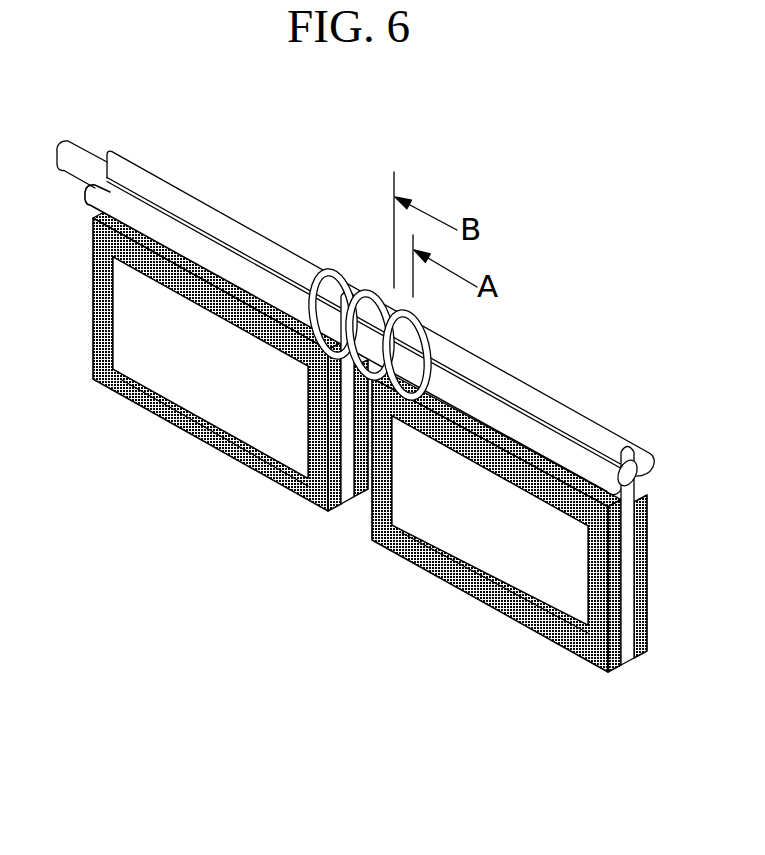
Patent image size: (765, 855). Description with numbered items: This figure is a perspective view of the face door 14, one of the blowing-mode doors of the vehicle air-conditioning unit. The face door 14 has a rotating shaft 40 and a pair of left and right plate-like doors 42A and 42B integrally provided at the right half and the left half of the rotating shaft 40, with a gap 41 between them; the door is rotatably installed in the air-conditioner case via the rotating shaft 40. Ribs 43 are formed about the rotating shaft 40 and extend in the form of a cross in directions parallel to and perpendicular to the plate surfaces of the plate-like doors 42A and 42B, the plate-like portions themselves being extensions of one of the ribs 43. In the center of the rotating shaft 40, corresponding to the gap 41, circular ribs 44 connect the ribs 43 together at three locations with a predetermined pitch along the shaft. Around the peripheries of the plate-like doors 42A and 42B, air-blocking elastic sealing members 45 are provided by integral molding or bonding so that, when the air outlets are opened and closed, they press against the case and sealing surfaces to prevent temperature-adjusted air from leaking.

The face door 14 is at (527, 327).
The rotating shaft 40 is at (210, 236).
The gap 41 is at (357, 515).
The plate-like door 42A is at (187, 372).
The plate-like door 42B is at (557, 570).
The ribs 43 is at (590, 430).
The circular ribs 44 is at (345, 283).
The elastic sealing members 45 is at (260, 462).